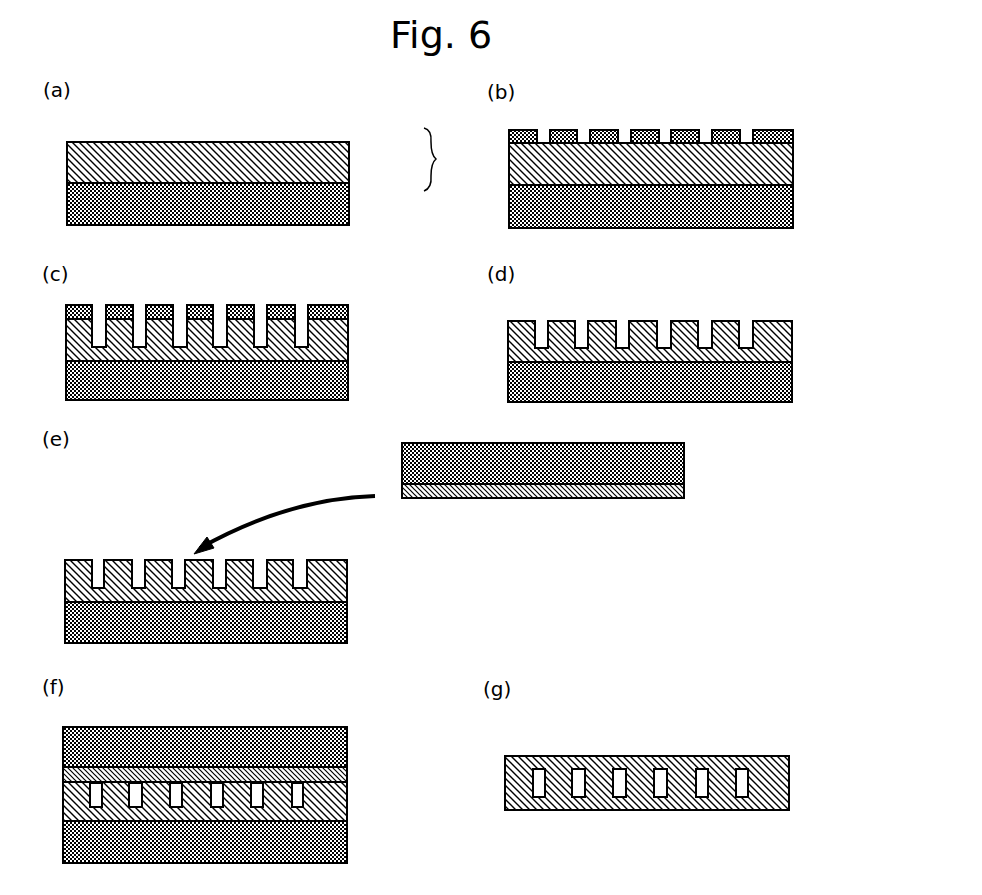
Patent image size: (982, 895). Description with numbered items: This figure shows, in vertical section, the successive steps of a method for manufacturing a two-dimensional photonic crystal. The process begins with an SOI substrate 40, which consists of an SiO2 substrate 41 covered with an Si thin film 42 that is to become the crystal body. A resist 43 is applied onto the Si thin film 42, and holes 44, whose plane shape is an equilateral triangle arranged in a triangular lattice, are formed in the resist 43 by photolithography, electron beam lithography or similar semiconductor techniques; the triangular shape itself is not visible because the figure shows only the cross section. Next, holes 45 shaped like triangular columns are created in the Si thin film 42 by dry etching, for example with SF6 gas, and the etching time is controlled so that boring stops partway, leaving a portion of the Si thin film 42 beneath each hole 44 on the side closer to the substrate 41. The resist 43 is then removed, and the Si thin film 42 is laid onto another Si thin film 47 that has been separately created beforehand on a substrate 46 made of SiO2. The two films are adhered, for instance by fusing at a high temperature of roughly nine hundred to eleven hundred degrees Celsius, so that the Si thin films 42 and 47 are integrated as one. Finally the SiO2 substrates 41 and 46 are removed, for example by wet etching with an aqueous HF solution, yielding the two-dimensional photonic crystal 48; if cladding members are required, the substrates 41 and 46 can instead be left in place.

The SOI substrate 40 is at (442, 159).
The SiO2 substrate 41 is at (337, 210).
The Si thin film 42 is at (337, 170).
The resist 43 is at (782, 135).
The holes 44 is at (585, 137).
The holes 45 is at (138, 335).
The substrate 46 is at (672, 458).
The Si thin film 47 is at (682, 498).
The two-dimensional photonic crystal 48 is at (773, 785).